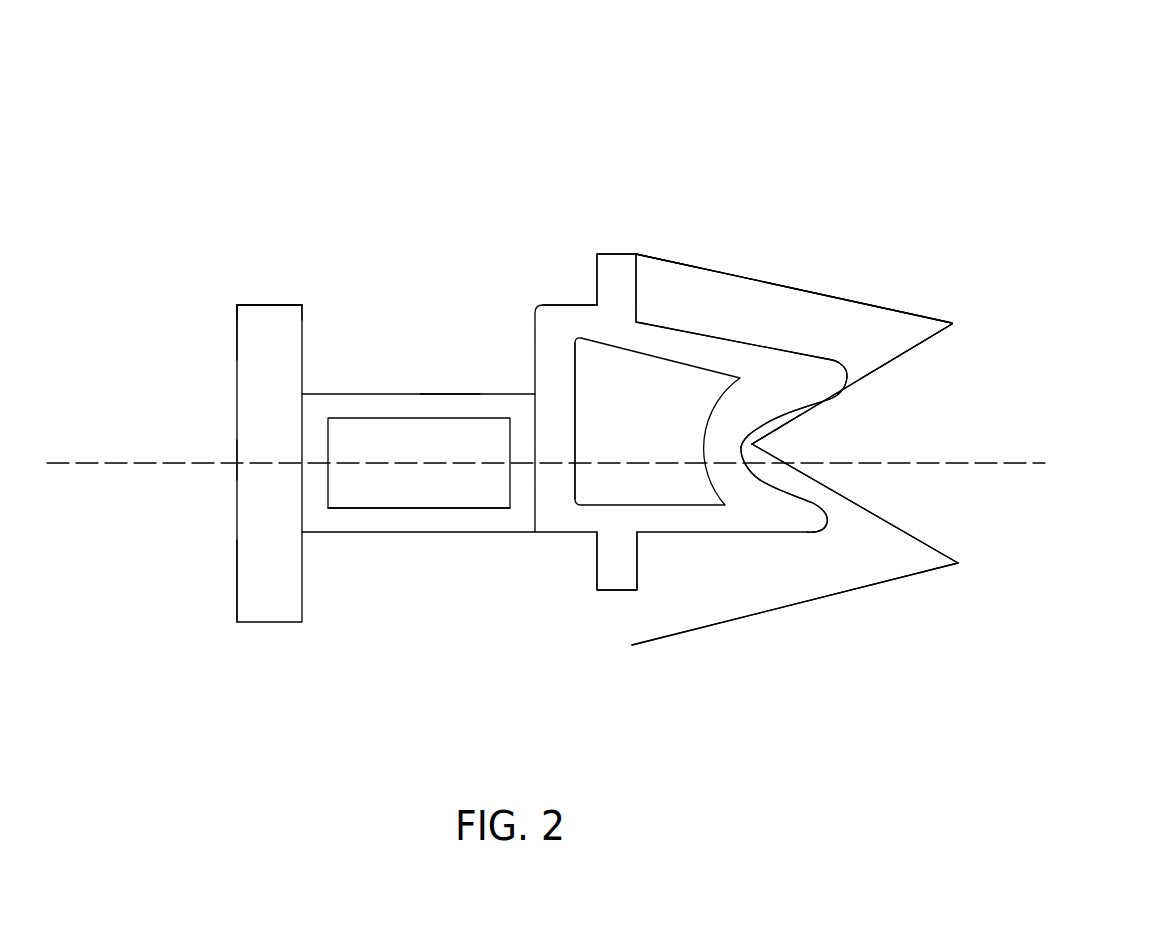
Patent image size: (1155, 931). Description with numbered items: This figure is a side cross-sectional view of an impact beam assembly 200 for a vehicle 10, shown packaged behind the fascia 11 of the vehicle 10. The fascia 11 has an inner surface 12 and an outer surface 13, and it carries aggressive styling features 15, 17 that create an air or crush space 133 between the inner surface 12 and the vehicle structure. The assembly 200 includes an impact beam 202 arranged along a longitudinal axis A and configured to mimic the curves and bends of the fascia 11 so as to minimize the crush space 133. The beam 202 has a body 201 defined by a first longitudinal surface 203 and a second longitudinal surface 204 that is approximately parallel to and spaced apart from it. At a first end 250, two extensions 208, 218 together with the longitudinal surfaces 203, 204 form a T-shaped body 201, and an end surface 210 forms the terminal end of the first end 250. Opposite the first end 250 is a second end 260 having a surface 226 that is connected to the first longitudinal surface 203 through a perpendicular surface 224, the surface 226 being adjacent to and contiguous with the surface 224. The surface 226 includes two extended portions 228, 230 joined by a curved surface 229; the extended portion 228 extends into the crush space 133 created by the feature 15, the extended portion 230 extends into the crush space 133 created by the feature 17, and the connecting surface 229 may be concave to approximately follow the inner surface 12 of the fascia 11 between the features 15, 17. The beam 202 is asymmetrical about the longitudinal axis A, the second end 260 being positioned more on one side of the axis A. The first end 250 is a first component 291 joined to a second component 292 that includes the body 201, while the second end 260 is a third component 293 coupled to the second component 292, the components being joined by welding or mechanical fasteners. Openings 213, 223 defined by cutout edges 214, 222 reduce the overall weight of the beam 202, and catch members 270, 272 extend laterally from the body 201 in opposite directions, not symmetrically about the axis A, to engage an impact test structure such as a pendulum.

The vehicle 10 is at (1087, 321).
The fascia 11 is at (952, 324).
The inner surface 12 is at (770, 612).
The outer surface 13 is at (851, 415).
The feature 15 is at (952, 323).
The feature 17 is at (958, 563).
The crush space 133 is at (892, 330).
The impact beam assembly 200 is at (207, 112).
The body 201 is at (253, 455).
The impact beam 202 is at (297, 249).
The first longitudinal surface 203 is at (337, 388).
The second longitudinal surface 204 is at (397, 533).
The extension 208 is at (265, 303).
The end surface 210 is at (236, 402).
The opening 213 is at (339, 481).
The cutout edge 214 is at (353, 508).
The extension 218 is at (232, 607).
The cutout edge 222 is at (605, 343).
The opening 223 is at (597, 480).
The perpendicular surface 224 is at (536, 375).
The surface 226 is at (563, 305).
The extended portion 228 is at (824, 358).
The curved surface 229 is at (766, 473).
The extended portion 230 is at (810, 521).
The first end 250 is at (209, 346).
The second end 260 is at (747, 298).
The catch member 270 is at (631, 254).
The catch member 272 is at (596, 590).
The first component 291 is at (269, 127).
The second component 292 is at (457, 211).
The third component 293 is at (691, 132).
The longitudinal axis A is at (535, 463).